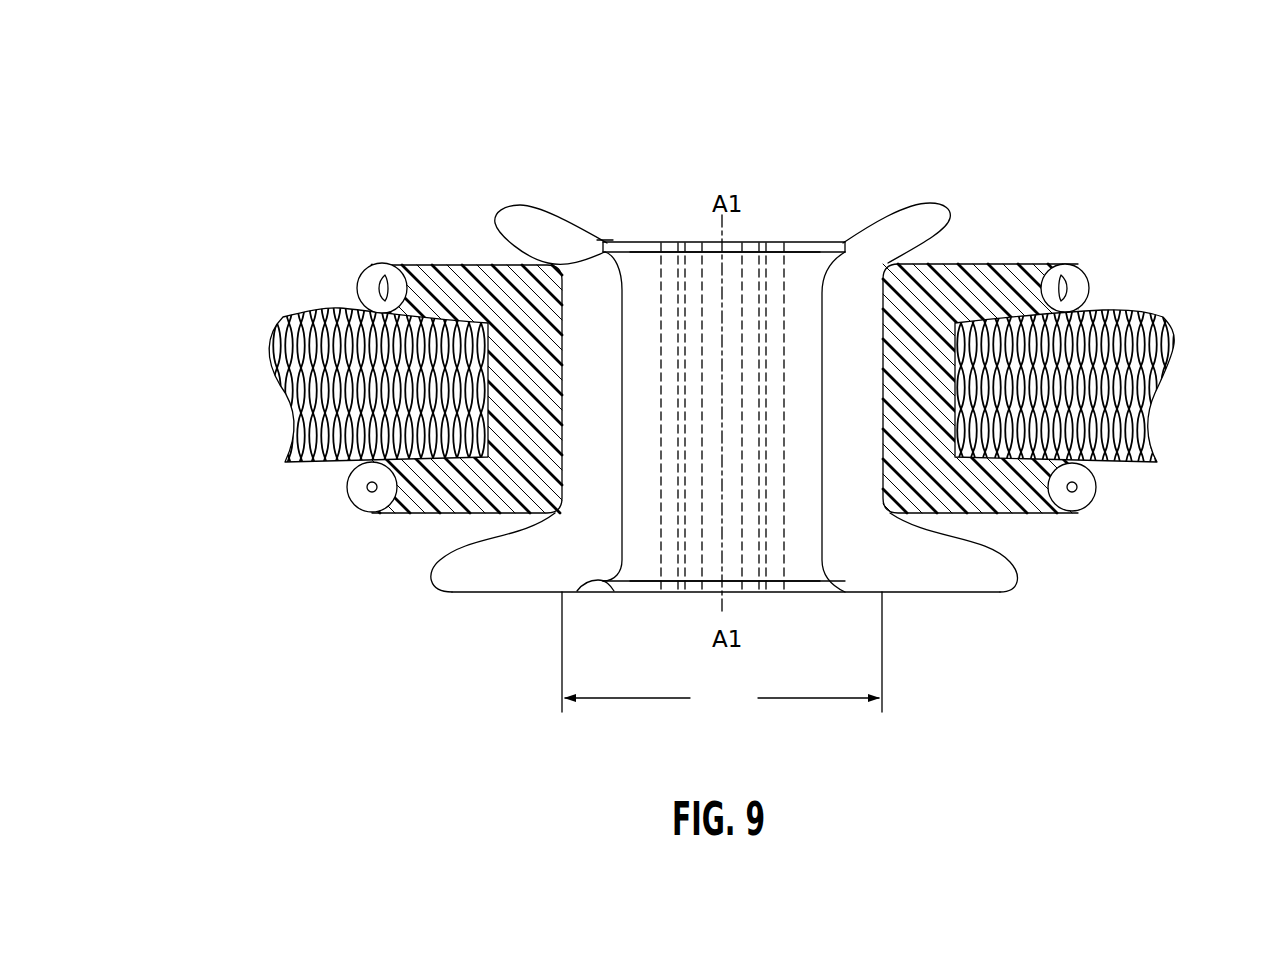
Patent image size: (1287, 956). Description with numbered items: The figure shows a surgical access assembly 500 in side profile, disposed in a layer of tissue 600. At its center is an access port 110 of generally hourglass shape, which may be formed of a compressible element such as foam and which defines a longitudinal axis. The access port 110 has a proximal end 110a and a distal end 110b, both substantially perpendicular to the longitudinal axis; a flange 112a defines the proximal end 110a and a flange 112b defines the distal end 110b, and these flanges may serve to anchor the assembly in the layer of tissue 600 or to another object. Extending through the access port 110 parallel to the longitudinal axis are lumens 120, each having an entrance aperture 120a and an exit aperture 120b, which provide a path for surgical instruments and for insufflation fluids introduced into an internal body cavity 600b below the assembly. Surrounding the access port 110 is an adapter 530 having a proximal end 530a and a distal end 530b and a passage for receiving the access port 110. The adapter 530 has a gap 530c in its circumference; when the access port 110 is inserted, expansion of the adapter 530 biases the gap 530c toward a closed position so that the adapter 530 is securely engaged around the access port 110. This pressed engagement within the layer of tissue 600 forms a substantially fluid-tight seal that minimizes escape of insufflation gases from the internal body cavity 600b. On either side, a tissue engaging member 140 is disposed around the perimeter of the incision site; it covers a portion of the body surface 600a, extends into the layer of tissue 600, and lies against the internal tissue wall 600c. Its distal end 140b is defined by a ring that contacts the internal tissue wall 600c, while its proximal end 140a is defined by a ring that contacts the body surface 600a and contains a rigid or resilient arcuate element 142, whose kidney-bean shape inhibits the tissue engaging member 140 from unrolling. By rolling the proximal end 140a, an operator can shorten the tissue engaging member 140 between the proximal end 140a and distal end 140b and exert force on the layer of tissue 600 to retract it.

The surgical access assembly 500 is at (497, 70).
The access port 110 is at (612, 434).
The proximal end 110a is at (813, 242).
The distal end 110b is at (817, 593).
The flange 112a is at (600, 242).
The flange 112b is at (574, 592).
The lumen 120 is at (786, 292).
The entrance aperture 120a is at (660, 243).
The exit aperture 120b is at (783, 593).
The adapter 530 is at (552, 362).
The proximal end 530a is at (515, 206).
The distal end 530b is at (460, 593).
The gap 530c is at (722, 653).
The layer of tissue 600 is at (283, 388).
The body surface 600a is at (320, 312).
The internal body cavity 600b is at (485, 667).
The internal tissue wall 600c is at (318, 465).
The tissue engaging member 140 is at (962, 358).
The proximal end 140a is at (1089, 282).
The distal end 140b is at (1094, 490).
The arcuate element 142 is at (1063, 280).